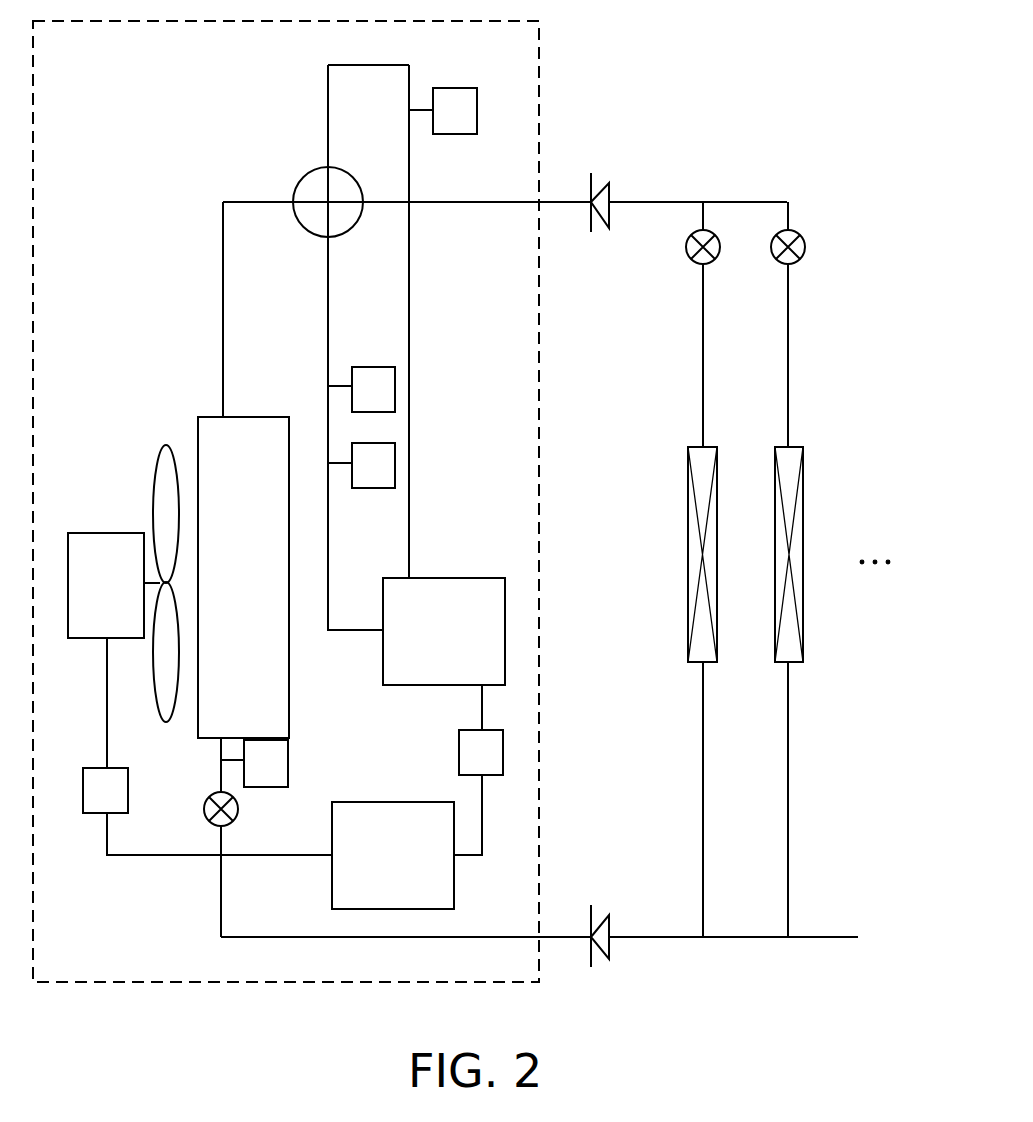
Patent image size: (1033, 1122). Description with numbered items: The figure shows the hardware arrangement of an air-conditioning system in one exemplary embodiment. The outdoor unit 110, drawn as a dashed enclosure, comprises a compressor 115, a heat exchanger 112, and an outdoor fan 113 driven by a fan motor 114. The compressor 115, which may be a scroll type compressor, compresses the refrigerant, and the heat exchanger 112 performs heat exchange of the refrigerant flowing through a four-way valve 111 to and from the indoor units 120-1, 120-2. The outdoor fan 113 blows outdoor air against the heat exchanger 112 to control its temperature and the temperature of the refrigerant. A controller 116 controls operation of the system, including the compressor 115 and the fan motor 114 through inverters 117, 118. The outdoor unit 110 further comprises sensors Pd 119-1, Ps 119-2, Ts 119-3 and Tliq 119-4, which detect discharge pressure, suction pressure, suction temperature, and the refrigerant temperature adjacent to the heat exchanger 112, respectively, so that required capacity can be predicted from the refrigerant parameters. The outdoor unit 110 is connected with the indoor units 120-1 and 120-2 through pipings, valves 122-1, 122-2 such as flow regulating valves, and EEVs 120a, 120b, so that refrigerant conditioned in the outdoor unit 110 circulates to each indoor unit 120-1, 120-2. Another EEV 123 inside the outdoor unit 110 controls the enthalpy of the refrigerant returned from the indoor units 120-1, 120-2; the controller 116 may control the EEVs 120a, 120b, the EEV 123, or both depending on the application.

The outdoor unit 110 is at (537, 73).
The four-way valve 111 is at (296, 190).
The heat exchanger 112 is at (248, 436).
The outdoor fan 113 is at (166, 460).
The fan motor 114 is at (104, 549).
The compressor 115 is at (437, 590).
The controller 116 is at (385, 818).
The inverter 117 is at (128, 790).
The inverter 118 is at (503, 752).
The sensor Pd 119-1 is at (470, 100).
The sensor Ps 119-2 is at (360, 370).
The sensor Ts 119-3 is at (387, 477).
The sensor Tliq 119-4 is at (288, 764).
The EEV 120a is at (690, 256).
The EEV 120b is at (800, 238).
The indoor unit 120-1 is at (712, 456).
The indoor unit 120-2 is at (798, 456).
The valve 122-1 is at (610, 195).
The valve 122-2 is at (609, 950).
The EEV 123 is at (238, 811).